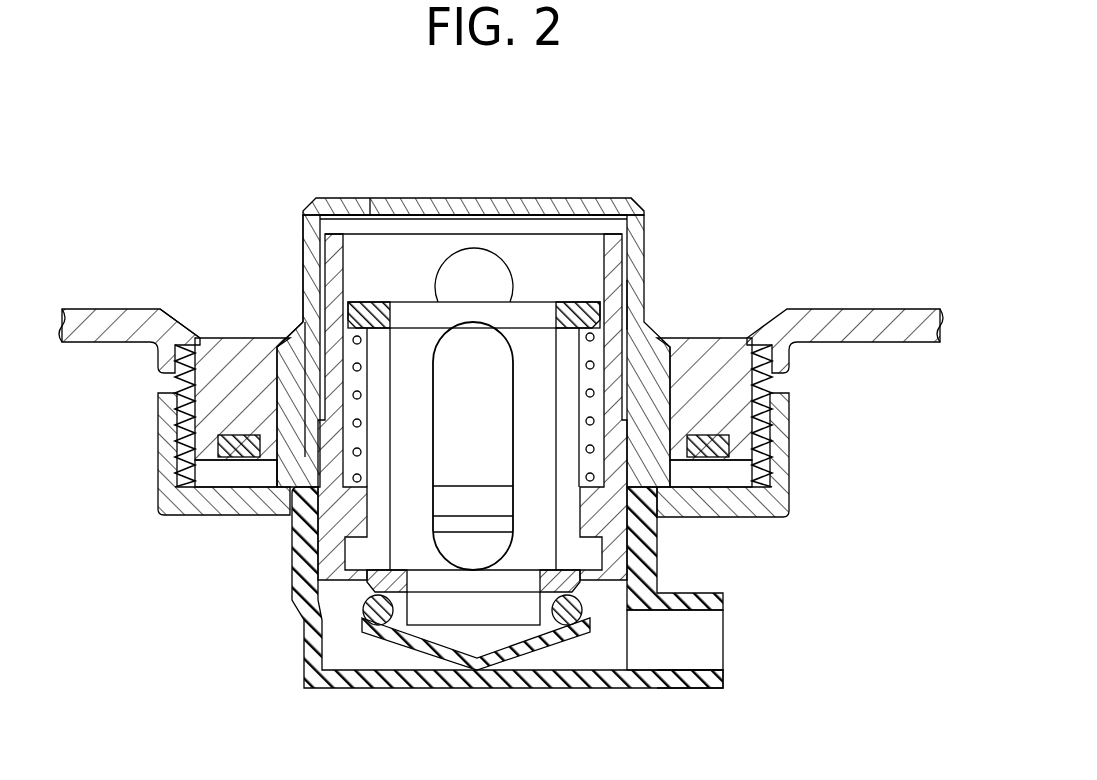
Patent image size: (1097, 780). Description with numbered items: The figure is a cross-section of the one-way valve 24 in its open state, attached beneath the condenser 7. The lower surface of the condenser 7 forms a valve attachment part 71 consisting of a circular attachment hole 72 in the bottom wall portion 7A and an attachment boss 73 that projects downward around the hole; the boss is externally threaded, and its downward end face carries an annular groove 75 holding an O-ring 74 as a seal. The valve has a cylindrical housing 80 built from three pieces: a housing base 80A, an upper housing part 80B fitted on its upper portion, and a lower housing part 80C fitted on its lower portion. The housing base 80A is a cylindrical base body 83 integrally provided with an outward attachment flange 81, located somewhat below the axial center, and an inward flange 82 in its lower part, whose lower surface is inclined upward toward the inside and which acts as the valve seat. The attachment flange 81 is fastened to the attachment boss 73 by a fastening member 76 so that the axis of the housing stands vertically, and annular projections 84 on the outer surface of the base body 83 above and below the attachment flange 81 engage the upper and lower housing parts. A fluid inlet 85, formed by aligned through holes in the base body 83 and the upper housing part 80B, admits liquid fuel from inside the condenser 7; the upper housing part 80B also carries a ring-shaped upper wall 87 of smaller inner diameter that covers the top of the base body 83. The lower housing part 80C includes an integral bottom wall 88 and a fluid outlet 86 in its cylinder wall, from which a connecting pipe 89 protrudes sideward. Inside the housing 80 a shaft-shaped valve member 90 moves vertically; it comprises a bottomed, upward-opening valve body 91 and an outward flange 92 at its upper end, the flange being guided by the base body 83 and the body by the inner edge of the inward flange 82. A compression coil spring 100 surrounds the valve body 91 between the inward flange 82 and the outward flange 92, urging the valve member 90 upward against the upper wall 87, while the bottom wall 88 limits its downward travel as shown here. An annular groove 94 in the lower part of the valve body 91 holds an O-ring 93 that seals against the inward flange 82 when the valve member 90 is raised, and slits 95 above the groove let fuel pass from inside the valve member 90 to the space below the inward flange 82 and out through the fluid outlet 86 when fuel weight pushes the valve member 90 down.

The condenser 7 is at (880, 343).
The bottom wall portion 7A is at (97, 347).
The one-way valve 24 is at (616, 120).
The valve attachment part 71 is at (212, 296).
The attachment hole 72 is at (292, 343).
The attachment boss 73 is at (190, 408).
The O-ring 74 is at (247, 458).
The annular groove 75 is at (235, 465).
The fastening member 76 is at (205, 513).
The housing 80 is at (640, 212).
The housing base 80A is at (622, 302).
The upper housing part 80B is at (648, 222).
The lower housing part 80C is at (650, 568).
The attachment flange 81 is at (272, 482).
The inward flange 82 is at (357, 498).
The base body 83 is at (320, 285).
The annular projection 84 is at (668, 388).
The fluid inlet 85 is at (378, 207).
The fluid outlet 86 is at (672, 660).
The upper wall 87 is at (372, 210).
The bottom wall 88 is at (430, 688).
The connecting pipe 89 is at (703, 688).
The valve member 90 is at (537, 296).
The valve body 91 is at (367, 630).
The outward flange 92 is at (378, 375).
The O-ring 93 is at (590, 603).
The annular groove 94 is at (590, 625).
The slits 95 is at (445, 362).
The compression coil spring 100 is at (592, 407).